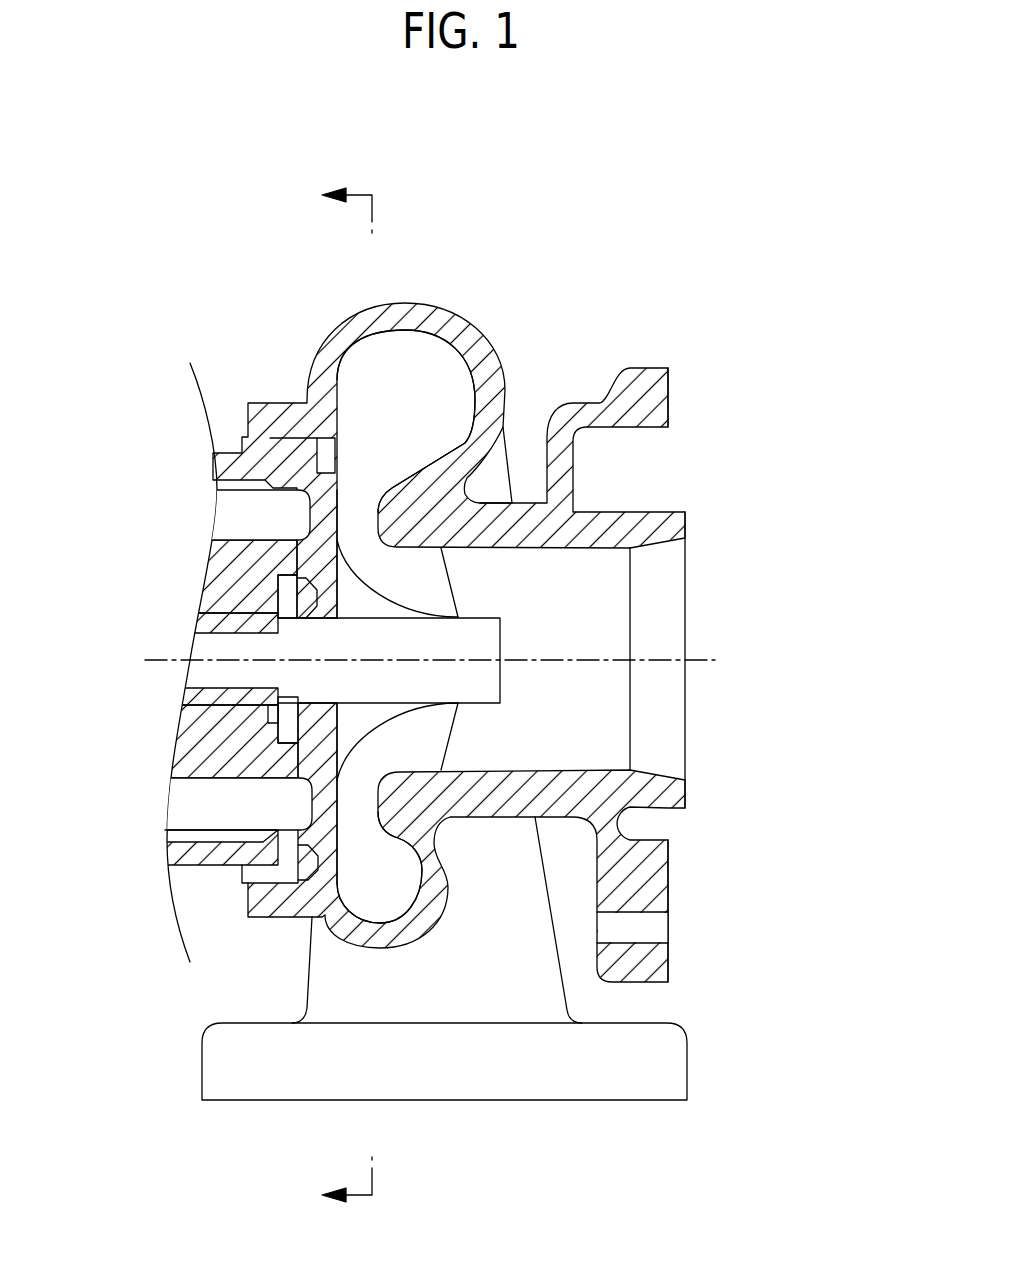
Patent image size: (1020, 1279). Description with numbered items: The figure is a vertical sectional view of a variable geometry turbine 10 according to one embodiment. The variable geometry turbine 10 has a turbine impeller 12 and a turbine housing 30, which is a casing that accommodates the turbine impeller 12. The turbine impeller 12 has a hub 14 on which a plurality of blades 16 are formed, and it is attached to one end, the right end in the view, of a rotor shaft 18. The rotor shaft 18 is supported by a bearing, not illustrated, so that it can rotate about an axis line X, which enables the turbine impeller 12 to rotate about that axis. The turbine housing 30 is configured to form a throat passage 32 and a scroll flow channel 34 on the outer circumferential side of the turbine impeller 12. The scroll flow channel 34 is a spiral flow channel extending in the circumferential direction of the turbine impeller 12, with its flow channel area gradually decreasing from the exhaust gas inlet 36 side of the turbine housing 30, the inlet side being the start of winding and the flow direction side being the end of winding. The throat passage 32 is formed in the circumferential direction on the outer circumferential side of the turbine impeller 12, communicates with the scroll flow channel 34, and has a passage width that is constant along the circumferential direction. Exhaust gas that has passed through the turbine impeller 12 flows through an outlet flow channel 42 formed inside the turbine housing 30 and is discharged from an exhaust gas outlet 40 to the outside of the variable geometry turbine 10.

The variable geometry turbine 10 is at (463, 692).
The turbine impeller 12 is at (442, 660).
The hub 14 is at (503, 692).
The blades 16 is at (450, 740).
The rotor shaft 18 is at (205, 620).
The turbine housing 30 is at (448, 305).
The throat passage 32 is at (375, 525).
The scroll flow channel 34 is at (421, 411).
The exhaust gas inlet 36 is at (520, 1100).
The exhaust gas outlet 40 is at (690, 745).
The outlet flow channel 42 is at (555, 596).